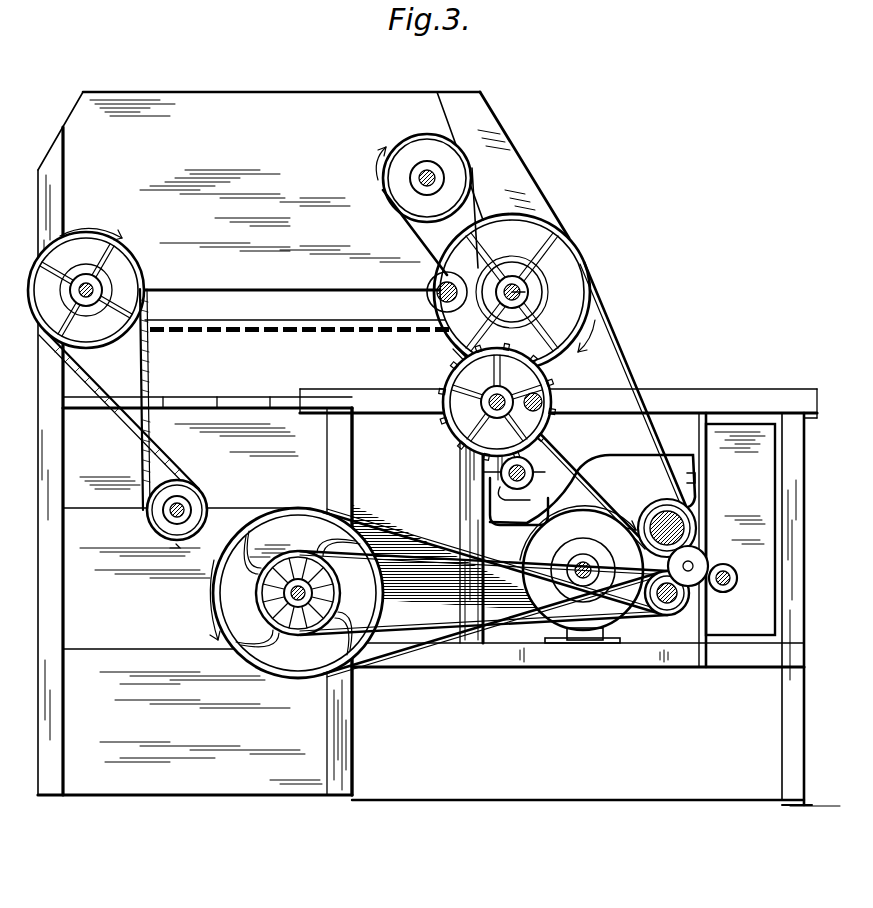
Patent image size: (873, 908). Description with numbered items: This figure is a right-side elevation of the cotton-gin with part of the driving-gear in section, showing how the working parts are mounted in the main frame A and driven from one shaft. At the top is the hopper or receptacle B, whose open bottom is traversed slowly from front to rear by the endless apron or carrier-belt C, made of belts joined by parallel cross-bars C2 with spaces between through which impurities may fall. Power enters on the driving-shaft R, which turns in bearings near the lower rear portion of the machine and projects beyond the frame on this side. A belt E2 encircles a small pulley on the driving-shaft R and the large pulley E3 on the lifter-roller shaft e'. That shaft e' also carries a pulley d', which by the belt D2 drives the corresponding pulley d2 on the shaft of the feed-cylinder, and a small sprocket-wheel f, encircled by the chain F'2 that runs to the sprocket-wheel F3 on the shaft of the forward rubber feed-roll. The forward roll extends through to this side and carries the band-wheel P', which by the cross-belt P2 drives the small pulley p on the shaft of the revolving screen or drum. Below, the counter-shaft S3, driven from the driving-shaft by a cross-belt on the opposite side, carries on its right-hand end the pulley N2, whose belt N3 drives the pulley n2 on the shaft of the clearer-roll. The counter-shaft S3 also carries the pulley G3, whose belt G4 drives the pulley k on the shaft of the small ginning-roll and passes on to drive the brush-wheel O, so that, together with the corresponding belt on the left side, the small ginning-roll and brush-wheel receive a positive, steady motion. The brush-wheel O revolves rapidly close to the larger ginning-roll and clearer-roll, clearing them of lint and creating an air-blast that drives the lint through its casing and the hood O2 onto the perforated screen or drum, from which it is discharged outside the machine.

The hopper B is at (303, 443).
The main frame A is at (439, 583).
The carrier-belt C is at (295, 338).
The cross-bars C2 is at (207, 335).
The band-wheel P' is at (86, 294).
The cross-belt P2 is at (119, 399).
The pulley p is at (192, 499).
The pulley d2 is at (423, 178).
The belt D2 is at (425, 246).
The pulley d' is at (487, 282).
The sprocket-wheel f is at (534, 282).
The lifter-roller shaft e' is at (514, 292).
The large pulley E3 is at (574, 250).
The belt E2 is at (612, 337).
The sprocket-wheel F3 is at (452, 426).
The chain F'2 is at (554, 385).
The hood O2 is at (450, 534).
The brush-wheel O is at (592, 549).
The driving-shaft R is at (660, 519).
The pulley G3 is at (262, 612).
The pulley N2 is at (258, 592).
The counter-shaft S3 is at (299, 612).
The belt G4 is at (408, 536).
The belt N3 is at (484, 593).
The pulley n2 is at (673, 614).
The pulley k is at (694, 562).